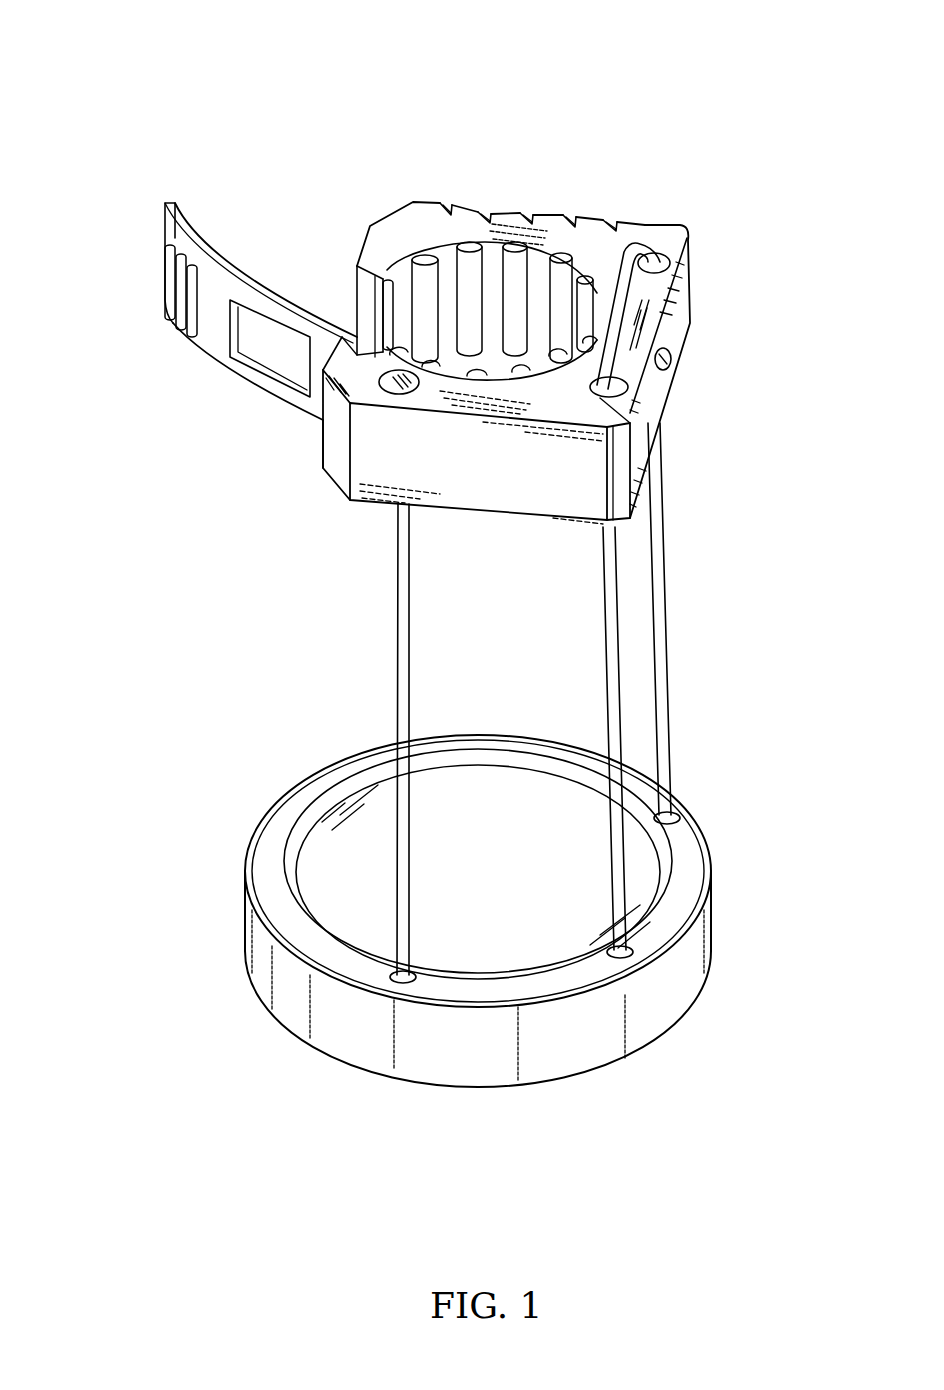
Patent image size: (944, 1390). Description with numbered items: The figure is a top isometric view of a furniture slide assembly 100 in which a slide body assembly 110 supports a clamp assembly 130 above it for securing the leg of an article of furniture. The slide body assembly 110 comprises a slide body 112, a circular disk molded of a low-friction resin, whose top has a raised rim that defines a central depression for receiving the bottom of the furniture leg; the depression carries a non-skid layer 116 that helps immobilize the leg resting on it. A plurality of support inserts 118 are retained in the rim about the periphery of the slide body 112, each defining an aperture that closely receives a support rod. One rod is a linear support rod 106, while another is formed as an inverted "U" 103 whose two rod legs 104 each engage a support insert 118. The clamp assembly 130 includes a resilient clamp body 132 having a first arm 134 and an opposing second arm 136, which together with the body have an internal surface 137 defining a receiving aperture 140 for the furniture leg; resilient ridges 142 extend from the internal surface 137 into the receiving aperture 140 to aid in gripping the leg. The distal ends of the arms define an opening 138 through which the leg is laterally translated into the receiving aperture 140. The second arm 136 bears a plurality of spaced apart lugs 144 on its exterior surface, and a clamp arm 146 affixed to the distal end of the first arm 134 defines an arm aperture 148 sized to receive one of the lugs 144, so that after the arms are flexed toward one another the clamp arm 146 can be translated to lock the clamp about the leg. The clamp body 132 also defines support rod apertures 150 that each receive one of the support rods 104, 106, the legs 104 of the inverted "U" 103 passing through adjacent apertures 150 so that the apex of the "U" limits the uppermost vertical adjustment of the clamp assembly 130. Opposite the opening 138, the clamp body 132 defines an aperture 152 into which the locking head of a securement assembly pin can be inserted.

The furniture slide assembly 100 is at (152, 82).
The inverted "U" 103 is at (640, 290).
The rod leg 104 is at (620, 630).
The support rod 106 is at (420, 673).
The slide body assembly 110 is at (718, 987).
The slide body 112 is at (640, 1052).
The non-skid layer 116 is at (499, 882).
The support inserts 118 is at (388, 983).
The clamp assembly 130 is at (352, 494).
The clamp body 132 is at (468, 518).
The first arm 134 is at (596, 448).
The second arm 136 is at (428, 200).
The internal surface 137 is at (535, 270).
The opening 138 is at (343, 296).
The receiving aperture 140 is at (492, 300).
The resilient ridges 142 is at (423, 290).
The lugs 144 is at (616, 218).
The clamp arm 146 is at (187, 200).
The arm aperture 148 is at (258, 336).
The support rod apertures 150 is at (398, 396).
The aperture 152 is at (670, 356).